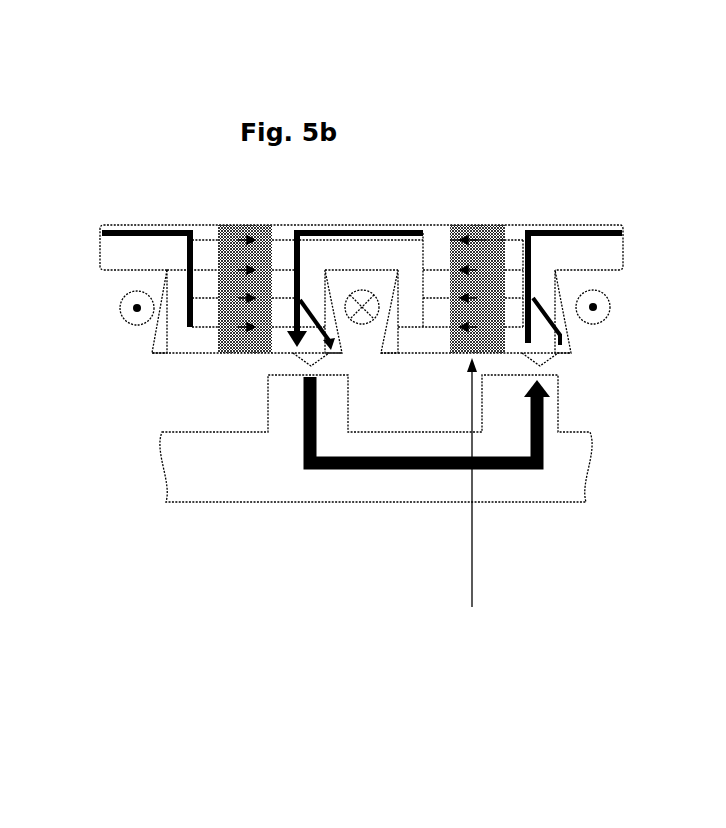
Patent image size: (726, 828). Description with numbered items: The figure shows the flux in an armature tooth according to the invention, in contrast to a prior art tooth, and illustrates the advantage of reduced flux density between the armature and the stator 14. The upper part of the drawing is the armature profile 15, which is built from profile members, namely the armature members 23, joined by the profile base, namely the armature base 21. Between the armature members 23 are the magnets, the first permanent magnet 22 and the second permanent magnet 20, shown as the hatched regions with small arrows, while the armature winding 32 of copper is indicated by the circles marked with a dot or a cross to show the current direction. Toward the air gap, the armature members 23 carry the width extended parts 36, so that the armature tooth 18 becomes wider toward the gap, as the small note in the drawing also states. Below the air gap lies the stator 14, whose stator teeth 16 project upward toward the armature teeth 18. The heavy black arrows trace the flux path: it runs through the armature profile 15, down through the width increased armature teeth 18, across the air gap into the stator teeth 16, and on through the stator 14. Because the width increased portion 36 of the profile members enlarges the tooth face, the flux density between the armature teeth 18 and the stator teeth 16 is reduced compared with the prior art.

The stator 14 is at (398, 540).
The armature profile 15 is at (360, 197).
The stator tooth 16 is at (279, 410).
The armature tooth 18 is at (196, 367).
The second permanent magnet 20 is at (233, 260).
The armature base 21 is at (360, 260).
The first permanent magnet 22 is at (401, 209).
The armature member 23 is at (190, 307).
The armature winding 32 is at (360, 305).
The width extended parts of the profile members 36 is at (167, 340).